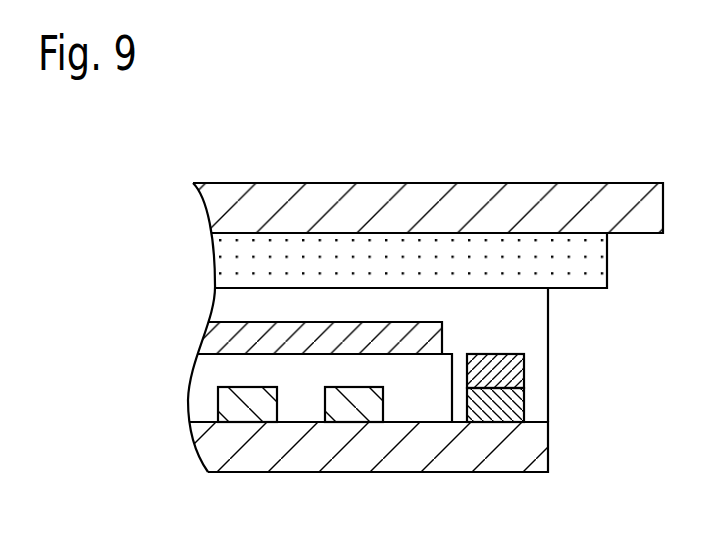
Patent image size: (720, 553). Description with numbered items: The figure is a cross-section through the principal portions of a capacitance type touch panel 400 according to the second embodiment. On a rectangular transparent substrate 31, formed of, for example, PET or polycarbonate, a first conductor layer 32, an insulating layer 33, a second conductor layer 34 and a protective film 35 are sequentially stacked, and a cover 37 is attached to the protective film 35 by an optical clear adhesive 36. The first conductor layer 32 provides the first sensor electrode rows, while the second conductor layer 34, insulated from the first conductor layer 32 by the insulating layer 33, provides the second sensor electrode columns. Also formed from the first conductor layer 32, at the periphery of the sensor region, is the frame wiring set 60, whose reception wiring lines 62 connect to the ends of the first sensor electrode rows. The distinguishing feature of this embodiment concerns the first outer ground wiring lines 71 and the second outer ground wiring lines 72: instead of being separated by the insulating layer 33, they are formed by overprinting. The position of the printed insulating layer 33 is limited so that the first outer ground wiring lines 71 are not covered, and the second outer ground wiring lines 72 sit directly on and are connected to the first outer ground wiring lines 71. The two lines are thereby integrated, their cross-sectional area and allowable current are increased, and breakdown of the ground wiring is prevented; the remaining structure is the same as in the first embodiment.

The touch panel 400 is at (535, 182).
The cover 37 is at (252, 183).
The optical clear adhesive 36 is at (213, 260).
The protective film 35 is at (211, 308).
The second conductor layer 34 is at (204, 333).
The insulating layer 33 is at (186, 373).
The first conductor layer 32 is at (219, 399).
The transparent substrate 31 is at (255, 472).
The second outer ground wiring lines 72 is at (525, 367).
The first outer ground wiring lines 71 is at (525, 403).
The frame wiring set 60 is at (383, 395).
The reception wiring lines 62 is at (354, 404).